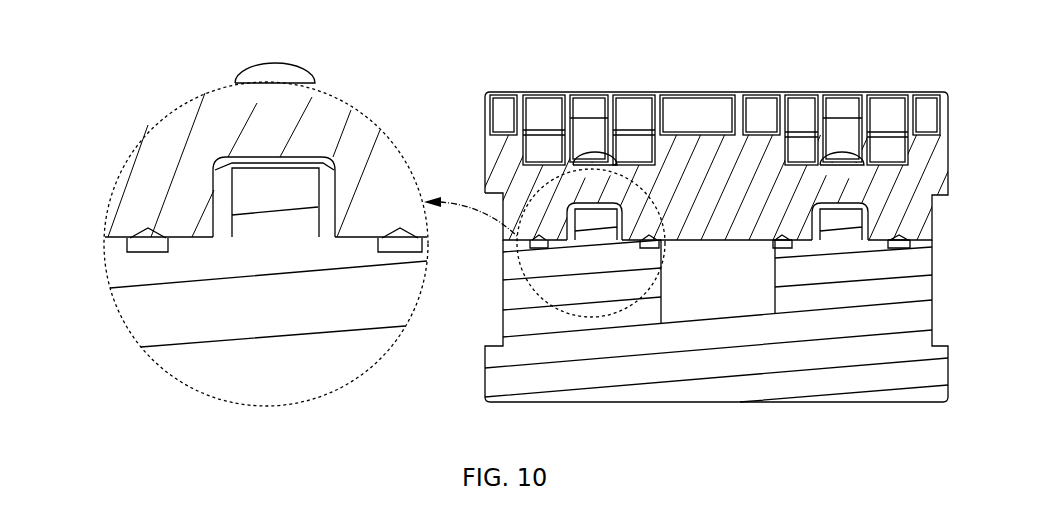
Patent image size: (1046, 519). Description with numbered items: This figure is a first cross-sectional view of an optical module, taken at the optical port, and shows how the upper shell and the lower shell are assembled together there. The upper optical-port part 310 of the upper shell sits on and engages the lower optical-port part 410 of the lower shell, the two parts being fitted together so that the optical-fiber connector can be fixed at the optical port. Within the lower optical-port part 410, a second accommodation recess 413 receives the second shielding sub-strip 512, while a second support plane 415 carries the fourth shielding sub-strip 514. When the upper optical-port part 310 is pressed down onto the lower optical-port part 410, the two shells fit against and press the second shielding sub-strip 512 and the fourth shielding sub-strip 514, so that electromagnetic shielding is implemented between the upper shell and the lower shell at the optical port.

The upper optical-port part 310 is at (222, 125).
The lower optical-port part 410 is at (200, 328).
The second accommodation recess 413 is at (127, 237).
The second support plane 415 is at (378, 240).
The second shielding sub-strip 512 is at (148, 226).
The fourth shielding sub-strip 514 is at (400, 240).